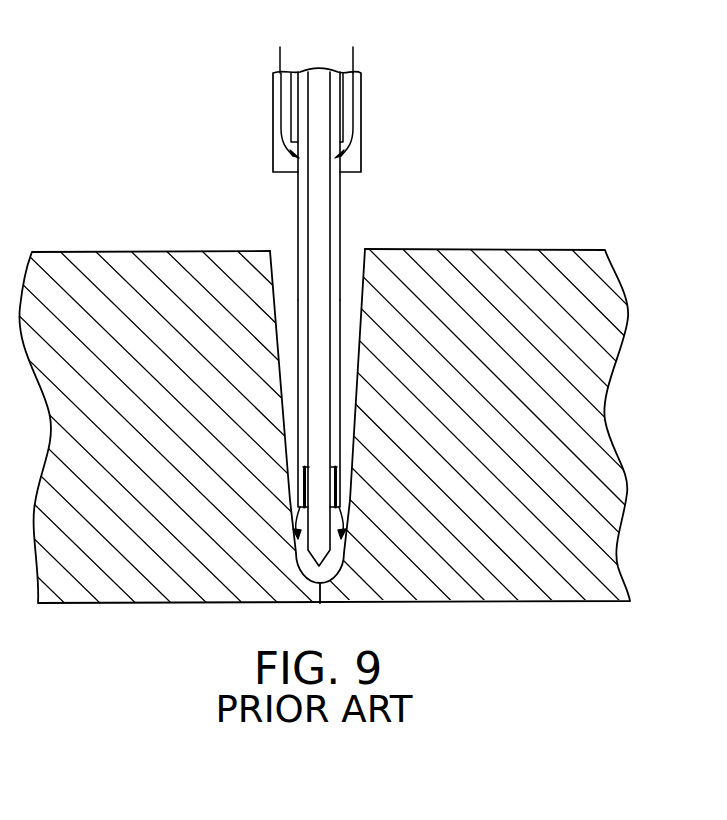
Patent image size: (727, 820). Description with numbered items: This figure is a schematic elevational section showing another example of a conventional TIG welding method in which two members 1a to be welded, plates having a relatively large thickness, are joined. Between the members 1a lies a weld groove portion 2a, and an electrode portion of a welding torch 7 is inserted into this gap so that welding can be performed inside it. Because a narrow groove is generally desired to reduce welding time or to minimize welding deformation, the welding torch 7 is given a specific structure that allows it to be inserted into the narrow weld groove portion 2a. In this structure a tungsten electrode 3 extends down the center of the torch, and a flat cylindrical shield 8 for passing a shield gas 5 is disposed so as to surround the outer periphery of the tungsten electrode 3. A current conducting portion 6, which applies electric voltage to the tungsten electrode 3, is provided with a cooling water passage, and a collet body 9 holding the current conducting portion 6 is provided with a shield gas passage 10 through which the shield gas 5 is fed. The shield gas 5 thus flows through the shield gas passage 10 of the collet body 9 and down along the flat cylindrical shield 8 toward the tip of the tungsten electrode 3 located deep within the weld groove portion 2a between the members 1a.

The members to be welded 1a is at (95, 252).
The weld groove portion 2a is at (354, 273).
The tungsten electrode 3 is at (340, 254).
The shield gas 5 is at (280, 47).
The current conducting portion 6 is at (340, 100).
The welding torch 7 is at (343, 190).
The flat cylindrical shield 8 is at (298, 236).
The collet body 9 is at (362, 133).
The shield gas passage 10 is at (278, 128).